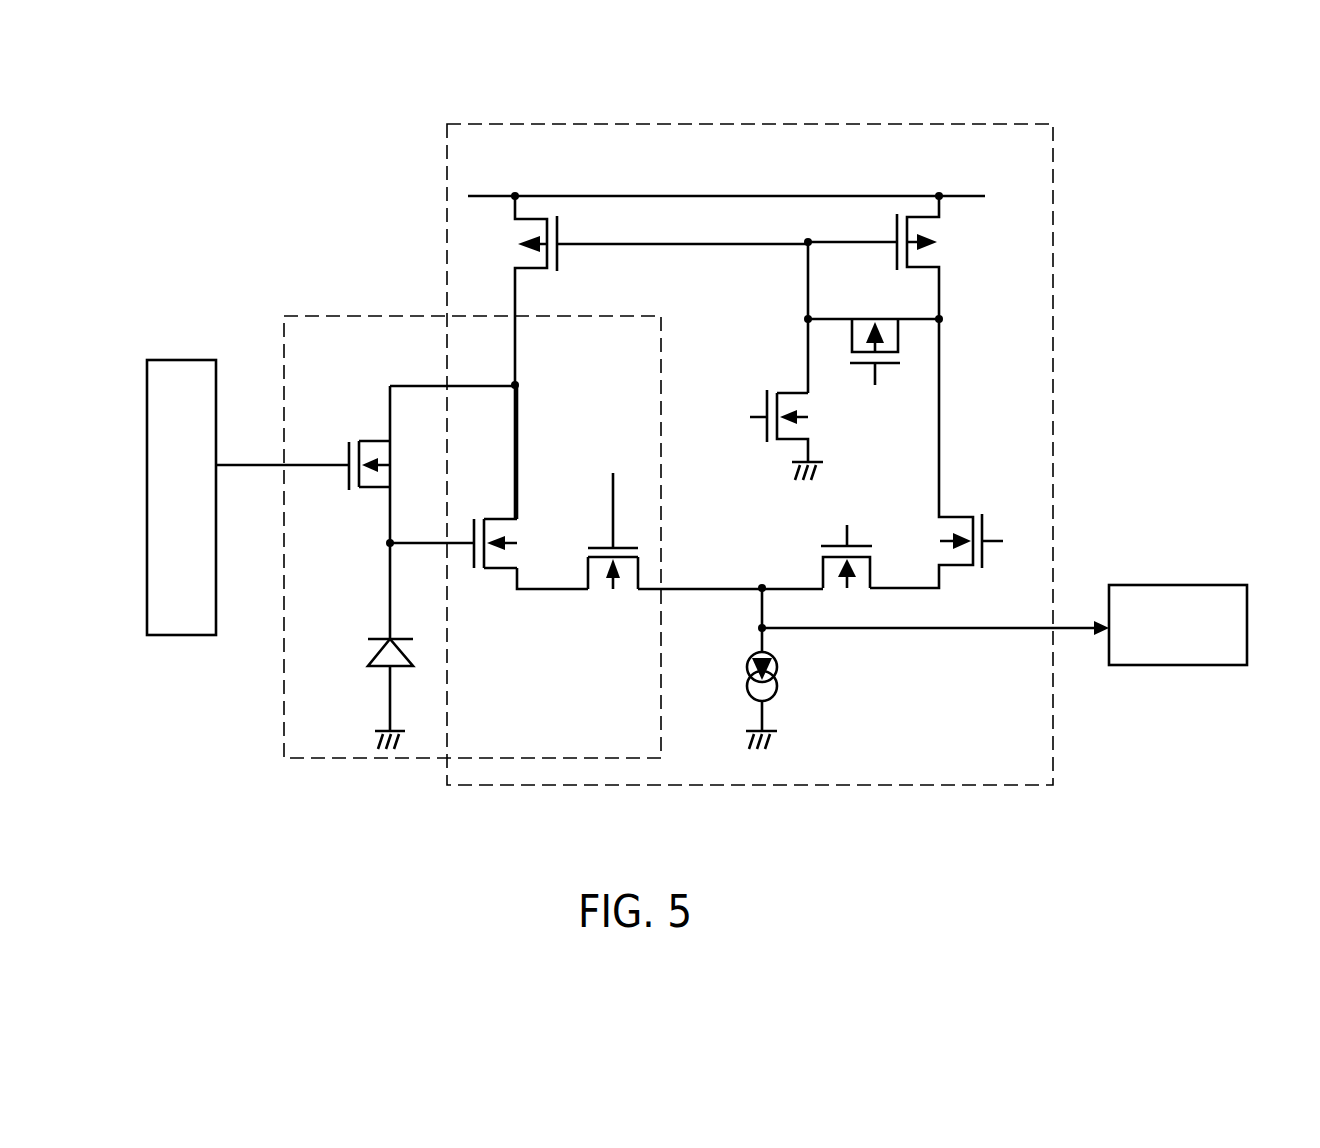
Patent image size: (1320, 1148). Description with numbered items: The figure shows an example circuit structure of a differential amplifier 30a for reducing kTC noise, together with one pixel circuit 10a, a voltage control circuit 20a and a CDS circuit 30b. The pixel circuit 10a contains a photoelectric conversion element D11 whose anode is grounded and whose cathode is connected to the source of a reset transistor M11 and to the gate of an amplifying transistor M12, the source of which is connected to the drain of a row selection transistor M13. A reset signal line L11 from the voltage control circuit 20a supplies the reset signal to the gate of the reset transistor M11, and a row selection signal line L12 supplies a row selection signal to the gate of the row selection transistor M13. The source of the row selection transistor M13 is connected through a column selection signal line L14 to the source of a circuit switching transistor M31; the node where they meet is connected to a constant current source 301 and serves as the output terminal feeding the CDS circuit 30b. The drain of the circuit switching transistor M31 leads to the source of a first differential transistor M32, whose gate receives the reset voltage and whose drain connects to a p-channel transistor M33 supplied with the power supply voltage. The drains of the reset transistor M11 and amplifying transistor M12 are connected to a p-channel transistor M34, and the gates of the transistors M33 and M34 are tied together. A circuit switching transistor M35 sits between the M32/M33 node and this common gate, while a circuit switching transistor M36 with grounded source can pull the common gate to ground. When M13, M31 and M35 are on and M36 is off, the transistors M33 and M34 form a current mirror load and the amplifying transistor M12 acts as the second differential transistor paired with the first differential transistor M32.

The pixel circuit 10a is at (340, 316).
The voltage control circuit 20a is at (181, 358).
The differential amplifier 30a is at (965, 122).
The correlated double sampling (CDS) circuit 30b is at (1205, 583).
The constant current source 301 is at (787, 680).
The reset signal line L11 is at (256, 468).
The row selection signal line L12 is at (612, 520).
The column selection signal line L14 is at (703, 592).
The reset transistor M11 is at (370, 498).
The amplifying transistor M12 is at (493, 572).
The row selection transistor M13 is at (610, 597).
The photoelectric conversion element D11 is at (368, 653).
The circuit switching transistor M31 is at (812, 565).
The first differential transistor M32 is at (940, 512).
The transistor M33 is at (943, 250).
The transistor M34 is at (510, 248).
The circuit switching transistor M35 is at (875, 314).
The circuit switching transistor M36 is at (780, 390).